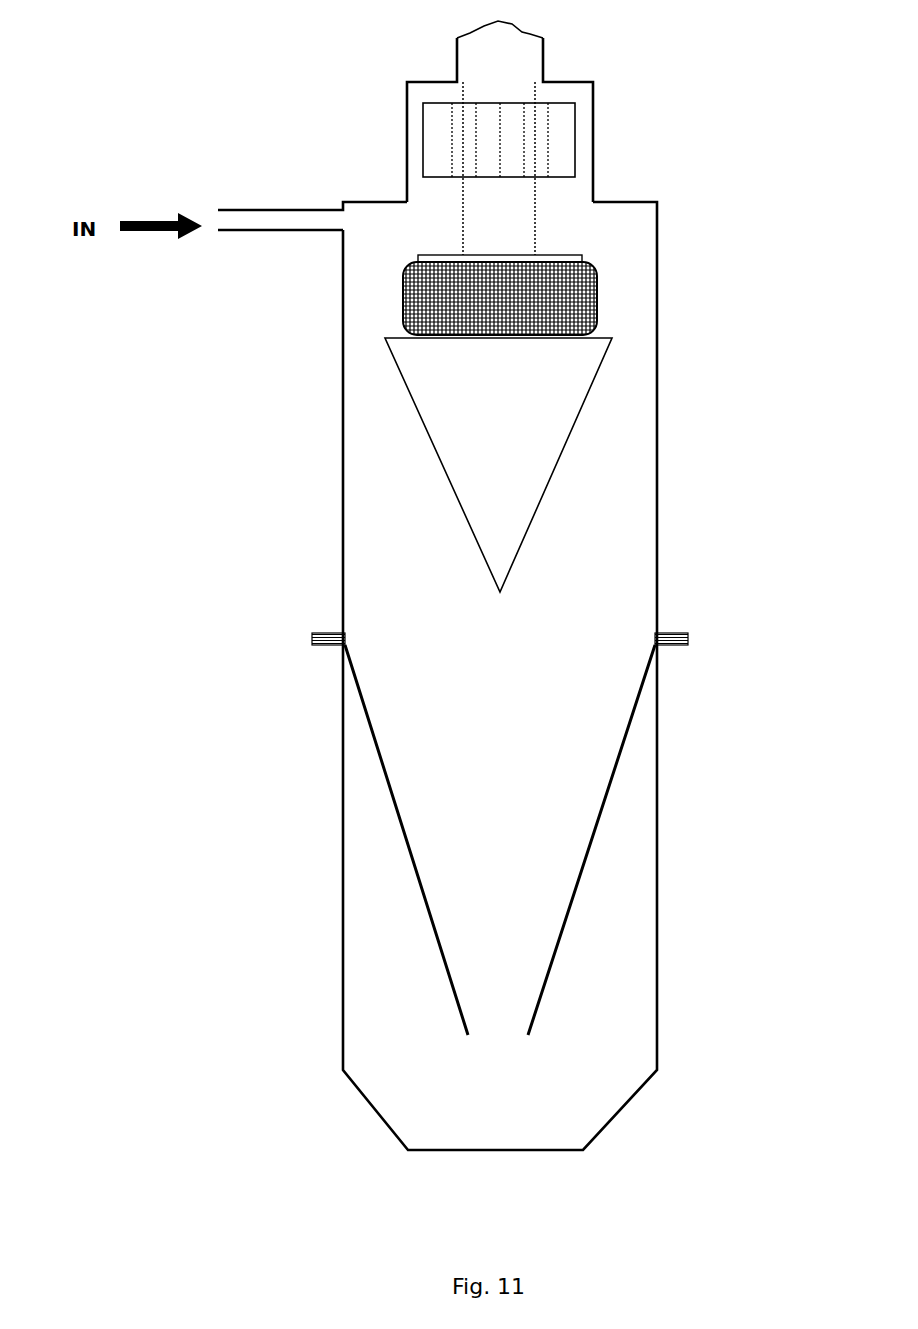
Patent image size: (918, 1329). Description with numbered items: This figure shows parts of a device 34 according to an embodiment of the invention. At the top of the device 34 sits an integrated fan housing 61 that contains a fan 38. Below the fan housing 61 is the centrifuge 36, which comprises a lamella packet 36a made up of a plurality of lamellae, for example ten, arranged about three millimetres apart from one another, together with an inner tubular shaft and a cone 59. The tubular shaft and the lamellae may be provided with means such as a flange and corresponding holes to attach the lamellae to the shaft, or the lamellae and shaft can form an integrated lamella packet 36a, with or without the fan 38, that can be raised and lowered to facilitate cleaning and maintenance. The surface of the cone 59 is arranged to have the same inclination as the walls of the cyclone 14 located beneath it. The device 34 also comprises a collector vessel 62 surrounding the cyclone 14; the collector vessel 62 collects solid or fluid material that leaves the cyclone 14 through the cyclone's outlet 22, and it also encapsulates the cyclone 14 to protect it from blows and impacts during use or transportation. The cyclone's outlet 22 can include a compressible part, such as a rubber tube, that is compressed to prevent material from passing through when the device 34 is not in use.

The cyclone 14 is at (612, 832).
The cyclone's outlet 22 is at (493, 970).
The device 34 is at (158, 405).
The centrifuge 36 is at (517, 263).
The lamella packet 36a is at (326, 256).
The fan 38 is at (453, 133).
The cone 59 is at (493, 445).
The integrated fan housing 61 is at (573, 115).
The collector vessel 62 is at (338, 870).